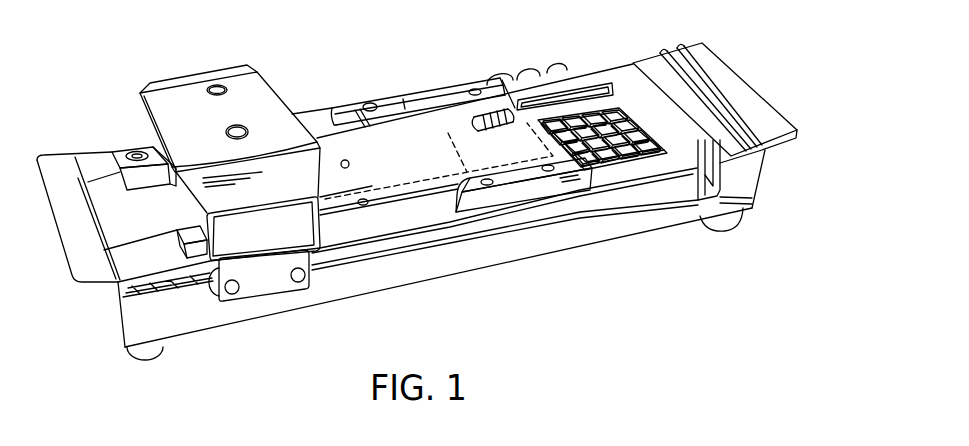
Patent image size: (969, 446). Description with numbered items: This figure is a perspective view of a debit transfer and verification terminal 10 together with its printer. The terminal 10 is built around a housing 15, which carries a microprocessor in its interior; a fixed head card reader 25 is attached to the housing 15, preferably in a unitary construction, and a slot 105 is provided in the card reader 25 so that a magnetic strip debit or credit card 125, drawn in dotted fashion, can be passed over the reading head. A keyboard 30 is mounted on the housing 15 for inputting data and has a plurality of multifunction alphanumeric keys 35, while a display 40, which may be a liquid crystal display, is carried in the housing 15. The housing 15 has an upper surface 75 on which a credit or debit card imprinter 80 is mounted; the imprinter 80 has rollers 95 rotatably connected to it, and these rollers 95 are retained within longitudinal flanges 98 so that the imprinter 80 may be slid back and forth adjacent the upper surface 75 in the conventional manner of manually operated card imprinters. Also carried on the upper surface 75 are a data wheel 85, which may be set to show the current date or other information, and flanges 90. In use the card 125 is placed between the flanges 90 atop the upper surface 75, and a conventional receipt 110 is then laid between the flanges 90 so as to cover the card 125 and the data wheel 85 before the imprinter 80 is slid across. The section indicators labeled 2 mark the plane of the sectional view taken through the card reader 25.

The section line 2- 2 is at (595, 43).
The debit transfer and verification terminal 10 is at (423, 187).
The housing 15 is at (352, 283).
The fixed head card reader 25 is at (738, 201).
The keyboard 30 is at (620, 104).
The multifunction alphanumeric keys 35 is at (645, 131).
The display 40 is at (575, 92).
The upper surface 75 is at (306, 117).
The credit or debit card imprinter 80 is at (265, 83).
The data wheel 85 is at (503, 80).
The flanges 90 is at (388, 102).
The rollers 95 is at (220, 301).
The longitudinal flanges 98 is at (153, 292).
The slot 105 is at (650, 113).
The receipt 110 is at (529, 123).
The card 125 is at (446, 133).